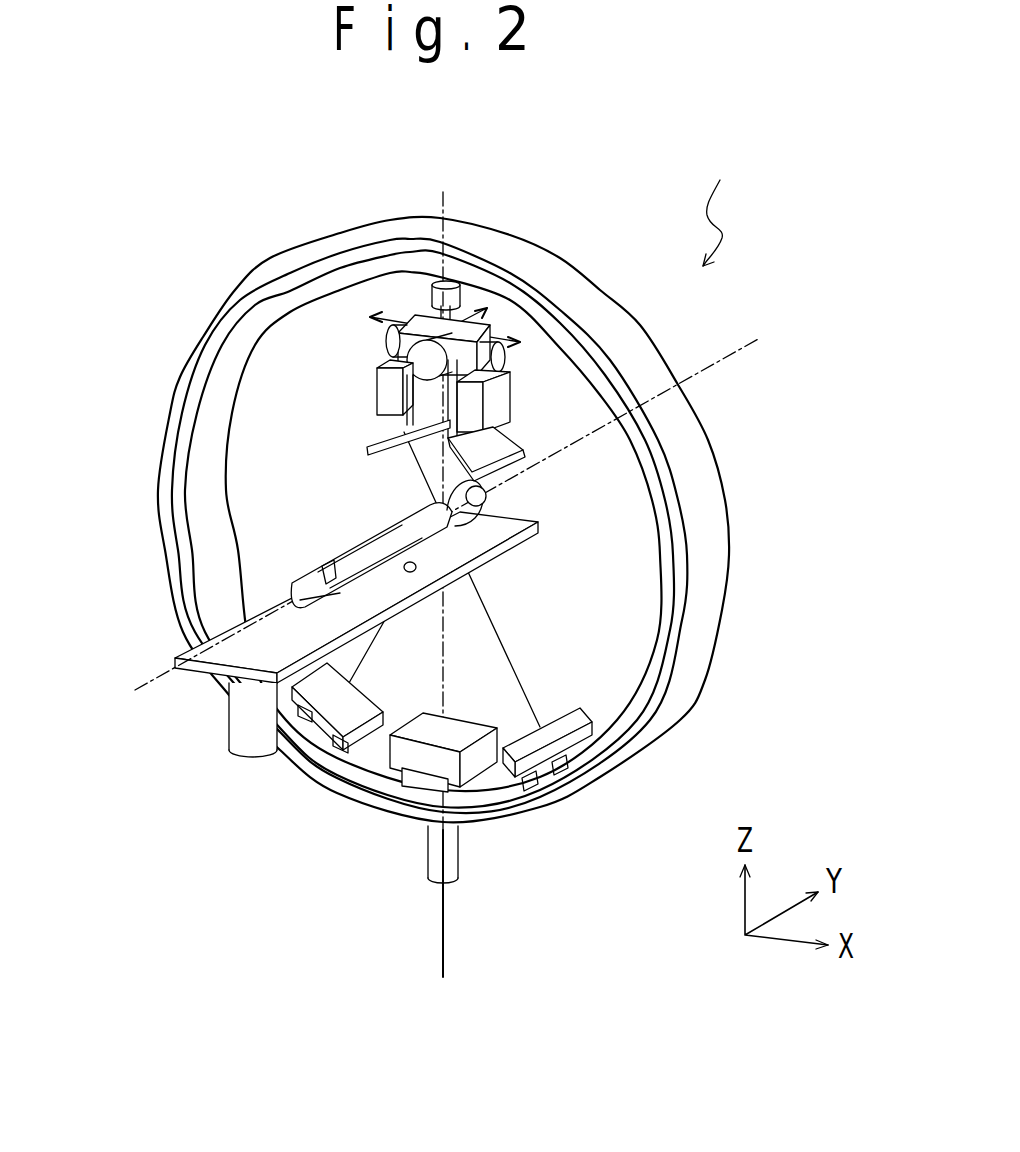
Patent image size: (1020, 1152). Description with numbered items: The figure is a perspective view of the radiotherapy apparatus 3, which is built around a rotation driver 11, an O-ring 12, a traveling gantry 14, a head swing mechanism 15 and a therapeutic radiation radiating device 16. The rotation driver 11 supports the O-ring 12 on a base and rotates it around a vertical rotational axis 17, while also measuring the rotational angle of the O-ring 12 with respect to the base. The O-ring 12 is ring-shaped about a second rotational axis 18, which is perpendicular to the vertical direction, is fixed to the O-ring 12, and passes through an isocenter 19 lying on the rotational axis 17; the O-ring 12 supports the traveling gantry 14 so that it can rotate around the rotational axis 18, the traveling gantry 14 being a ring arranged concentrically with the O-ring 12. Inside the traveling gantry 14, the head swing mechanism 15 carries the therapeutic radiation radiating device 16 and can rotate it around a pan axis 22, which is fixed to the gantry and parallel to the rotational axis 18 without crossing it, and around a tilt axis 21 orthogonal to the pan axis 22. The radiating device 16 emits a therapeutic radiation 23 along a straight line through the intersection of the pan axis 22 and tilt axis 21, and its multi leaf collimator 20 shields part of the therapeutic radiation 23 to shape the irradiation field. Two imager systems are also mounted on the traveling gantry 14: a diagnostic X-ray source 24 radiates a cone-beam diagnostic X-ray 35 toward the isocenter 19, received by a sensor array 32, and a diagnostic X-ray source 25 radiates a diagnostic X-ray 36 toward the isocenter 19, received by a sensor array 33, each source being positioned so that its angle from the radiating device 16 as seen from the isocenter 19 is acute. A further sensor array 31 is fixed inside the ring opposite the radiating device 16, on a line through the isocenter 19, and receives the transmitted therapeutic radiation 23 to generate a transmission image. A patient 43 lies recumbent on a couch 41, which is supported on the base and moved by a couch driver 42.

The radiotherapy apparatus 3 is at (738, 174).
The rotation driver 11 is at (427, 857).
The O-ring 12 is at (702, 437).
The traveling gantry 14 is at (660, 530).
The head swing mechanism 15 is at (388, 338).
The therapeutic radiation radiating device 16 is at (440, 287).
The rotational axis 17 is at (450, 922).
The rotational axis 18 is at (137, 690).
The isocenter 19 is at (470, 552).
The multi leaf collimator 20 is at (512, 398).
The tilt axis 21 is at (395, 318).
The pan axis 22 is at (470, 312).
The therapeutic radiation 23 is at (450, 965).
The diagnostic X-ray source 24 is at (385, 462).
The diagnostic X-ray source 25 is at (487, 496).
The sensor array 31 is at (445, 720).
The sensor array 32 is at (585, 712).
The sensor array 33 is at (345, 697).
The diagnostic X-ray 35 is at (415, 492).
The diagnostic X-ray 36 is at (493, 622).
The couch 41 is at (180, 655).
The couch driver 42 is at (235, 718).
The patient 43 is at (327, 572).